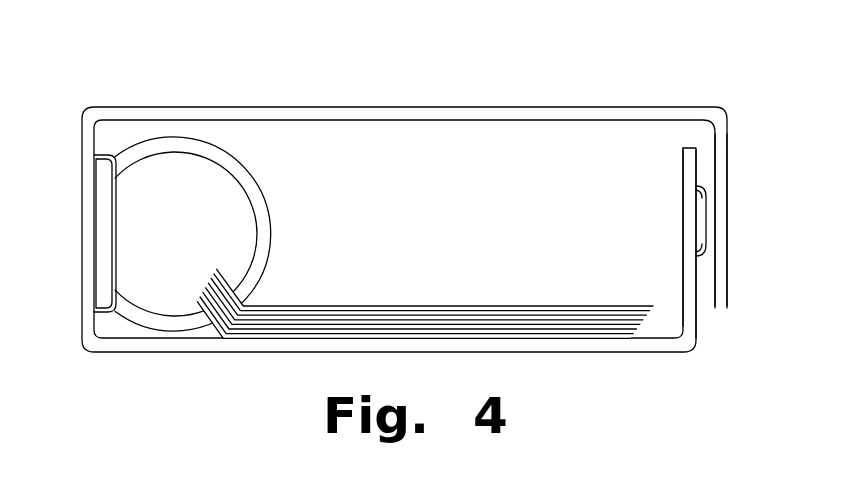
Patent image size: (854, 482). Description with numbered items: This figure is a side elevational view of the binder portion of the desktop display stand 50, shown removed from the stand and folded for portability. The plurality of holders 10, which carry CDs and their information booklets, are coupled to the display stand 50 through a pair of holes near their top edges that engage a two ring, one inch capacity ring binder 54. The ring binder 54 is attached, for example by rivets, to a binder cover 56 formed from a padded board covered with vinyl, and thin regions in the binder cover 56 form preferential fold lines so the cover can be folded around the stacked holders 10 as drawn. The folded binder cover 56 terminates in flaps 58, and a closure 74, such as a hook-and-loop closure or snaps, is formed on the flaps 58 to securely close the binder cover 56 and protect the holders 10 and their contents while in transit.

The display stand 50 is at (406, 176).
The binder cover 56 is at (429, 200).
The flaps 58 is at (683, 172).
The ring binder 54 is at (269, 208).
The holders 10 is at (508, 305).
The closure 74 is at (712, 225).